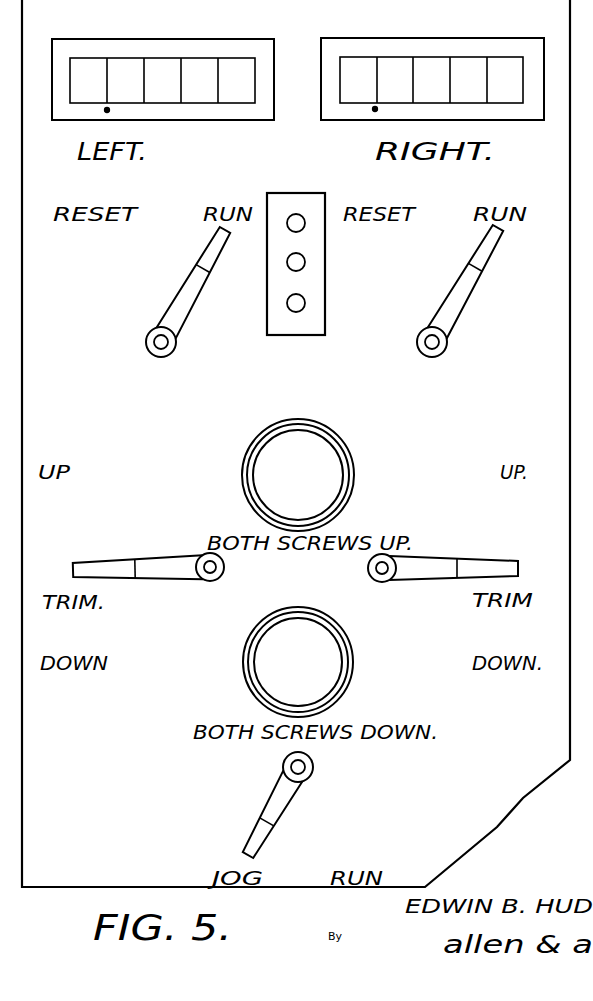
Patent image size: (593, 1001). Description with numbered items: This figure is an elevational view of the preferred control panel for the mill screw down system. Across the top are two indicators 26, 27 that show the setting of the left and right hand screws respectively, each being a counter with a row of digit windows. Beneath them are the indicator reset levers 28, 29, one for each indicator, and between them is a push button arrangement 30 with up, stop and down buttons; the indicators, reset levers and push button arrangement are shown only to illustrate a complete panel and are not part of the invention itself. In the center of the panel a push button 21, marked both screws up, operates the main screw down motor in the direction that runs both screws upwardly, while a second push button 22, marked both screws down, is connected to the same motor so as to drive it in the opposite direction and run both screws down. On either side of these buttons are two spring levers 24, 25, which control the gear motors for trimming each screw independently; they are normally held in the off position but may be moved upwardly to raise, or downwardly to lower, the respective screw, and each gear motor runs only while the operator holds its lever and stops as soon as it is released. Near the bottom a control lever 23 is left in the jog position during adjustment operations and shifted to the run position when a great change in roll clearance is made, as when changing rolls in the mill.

The push button 21 is at (326, 464).
The push button 22 is at (327, 646).
The control lever 23 is at (256, 821).
The spring lever 24 is at (130, 537).
The spring lever 25 is at (471, 556).
The indicator 26 is at (87, 128).
The indicator 27 is at (341, 128).
The indicator reset lever 28 is at (199, 313).
The indicator reset lever 29 is at (475, 306).
The push button arrangement 30 is at (326, 303).